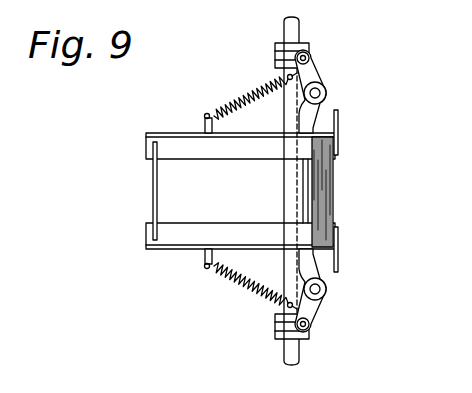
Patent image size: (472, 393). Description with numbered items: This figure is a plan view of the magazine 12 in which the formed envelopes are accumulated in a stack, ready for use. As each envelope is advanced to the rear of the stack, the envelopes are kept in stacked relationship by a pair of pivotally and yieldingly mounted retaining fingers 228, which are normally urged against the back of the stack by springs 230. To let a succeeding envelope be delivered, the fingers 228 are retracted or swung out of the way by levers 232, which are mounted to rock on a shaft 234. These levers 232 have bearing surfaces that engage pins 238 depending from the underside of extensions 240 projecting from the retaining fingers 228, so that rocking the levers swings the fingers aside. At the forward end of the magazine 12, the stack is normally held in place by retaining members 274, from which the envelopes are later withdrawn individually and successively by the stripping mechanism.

The magazine 12 is at (188, 249).
The retaining fingers 228 is at (319, 112).
The springs 230 is at (245, 93).
The levers 232 is at (310, 46).
The shaft 234 is at (286, 196).
The pins 238 is at (309, 58).
The extensions 240 is at (313, 71).
The retaining members 274 is at (338, 138).